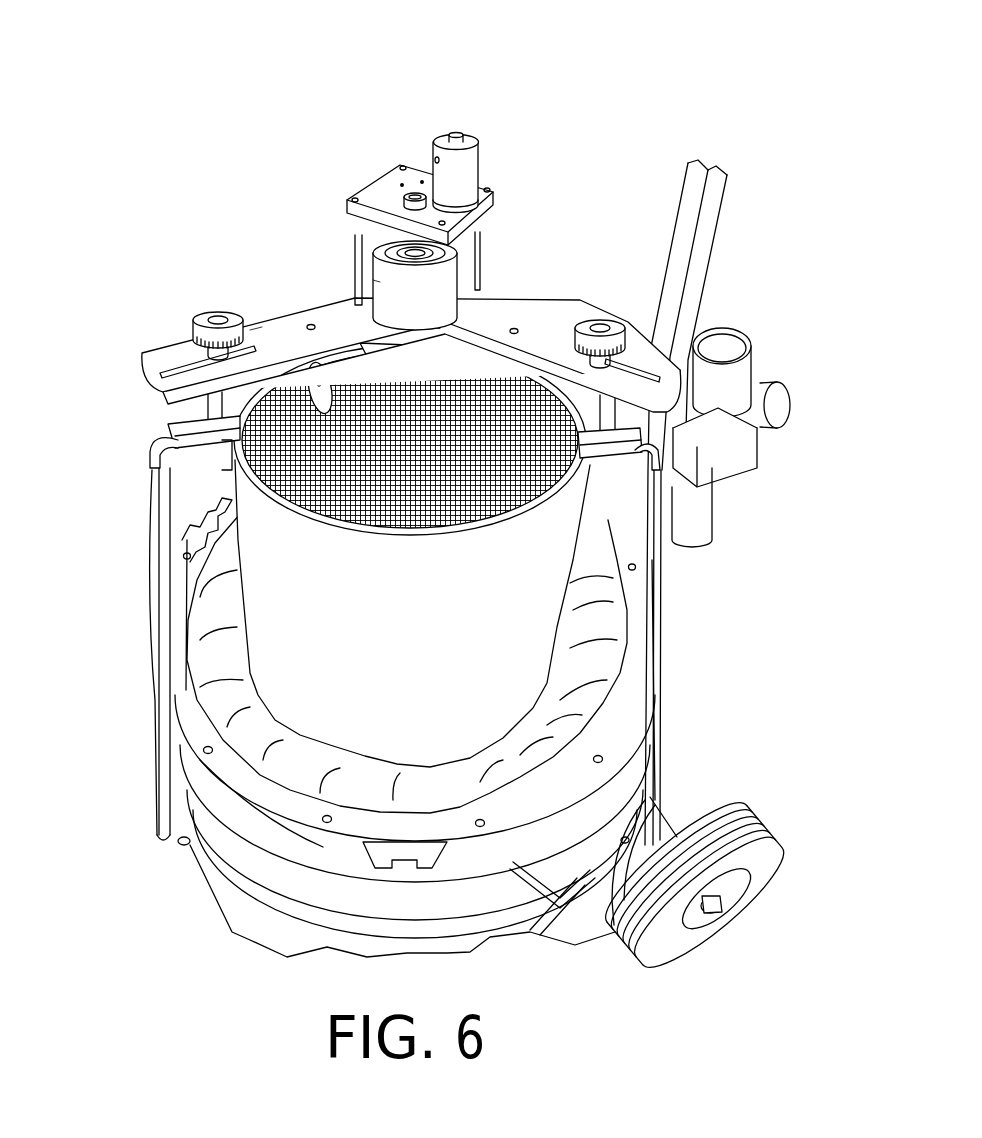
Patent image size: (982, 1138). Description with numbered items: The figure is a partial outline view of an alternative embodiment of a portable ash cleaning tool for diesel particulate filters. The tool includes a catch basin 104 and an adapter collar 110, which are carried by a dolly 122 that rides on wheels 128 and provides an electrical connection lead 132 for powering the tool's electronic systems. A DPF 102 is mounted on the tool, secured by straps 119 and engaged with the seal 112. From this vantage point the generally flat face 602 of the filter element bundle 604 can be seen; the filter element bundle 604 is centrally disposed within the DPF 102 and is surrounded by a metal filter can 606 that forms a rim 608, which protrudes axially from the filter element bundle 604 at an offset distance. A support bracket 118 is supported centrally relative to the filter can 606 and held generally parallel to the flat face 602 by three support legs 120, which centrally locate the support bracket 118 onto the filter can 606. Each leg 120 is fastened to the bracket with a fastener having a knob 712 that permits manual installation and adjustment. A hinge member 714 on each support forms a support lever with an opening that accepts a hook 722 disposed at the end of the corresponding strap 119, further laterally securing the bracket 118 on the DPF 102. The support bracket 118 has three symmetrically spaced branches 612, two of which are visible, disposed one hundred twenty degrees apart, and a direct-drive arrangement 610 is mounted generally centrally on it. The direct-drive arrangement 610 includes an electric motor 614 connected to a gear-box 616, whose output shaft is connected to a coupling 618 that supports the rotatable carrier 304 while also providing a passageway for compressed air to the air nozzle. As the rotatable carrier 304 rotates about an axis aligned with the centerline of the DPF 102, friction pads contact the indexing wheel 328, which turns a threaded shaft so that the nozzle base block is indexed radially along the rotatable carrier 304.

The direct-drive arrangement 610 is at (494, 88).
The electric motor 614 is at (448, 172).
The gear-box 616 is at (373, 197).
The coupling 618 is at (385, 280).
The rotatable carrier 304 is at (530, 328).
The branches 612 is at (275, 327).
The support bracket 118 is at (258, 333).
The knob 712 is at (215, 322).
The indexing wheel 328 is at (318, 392).
The support legs 120 is at (237, 419).
The hook 722 is at (150, 452).
The hinge member 714 is at (177, 500).
The flat face 602 is at (345, 480).
The filter element bundle 604 is at (428, 482).
The filter can 606 is at (428, 637).
The rim 608 is at (343, 518).
The DPF 102 is at (315, 587).
The catch basin 104 is at (237, 897).
The electrical connection lead 132 is at (697, 497).
The straps 119 is at (652, 595).
The seal 112 is at (590, 657).
The adapter collar 110 is at (623, 712).
The dolly 122 is at (650, 787).
The wheels 128 is at (735, 872).